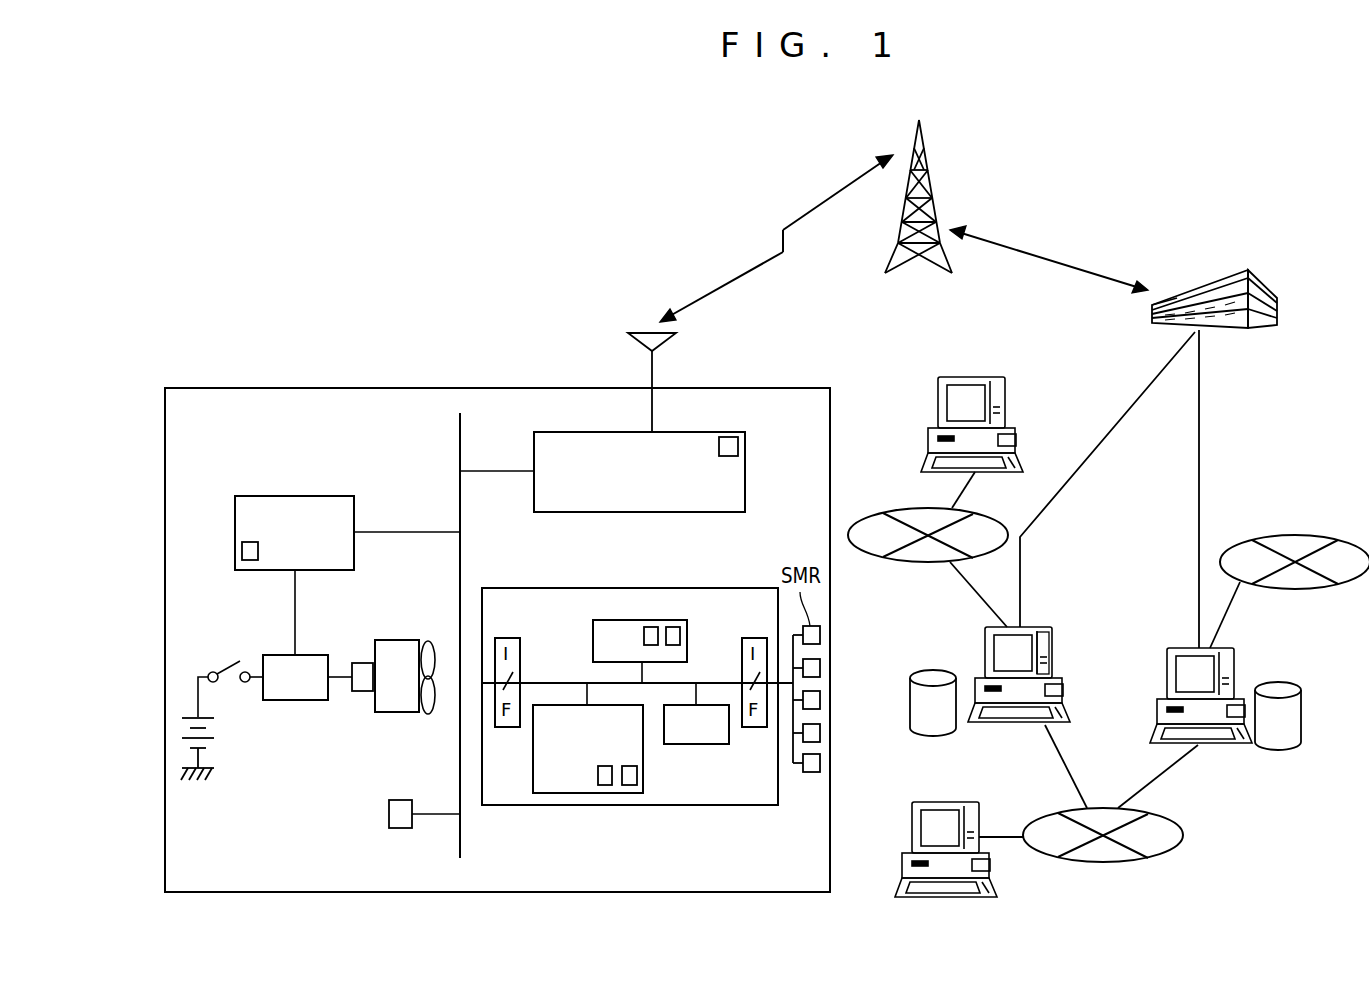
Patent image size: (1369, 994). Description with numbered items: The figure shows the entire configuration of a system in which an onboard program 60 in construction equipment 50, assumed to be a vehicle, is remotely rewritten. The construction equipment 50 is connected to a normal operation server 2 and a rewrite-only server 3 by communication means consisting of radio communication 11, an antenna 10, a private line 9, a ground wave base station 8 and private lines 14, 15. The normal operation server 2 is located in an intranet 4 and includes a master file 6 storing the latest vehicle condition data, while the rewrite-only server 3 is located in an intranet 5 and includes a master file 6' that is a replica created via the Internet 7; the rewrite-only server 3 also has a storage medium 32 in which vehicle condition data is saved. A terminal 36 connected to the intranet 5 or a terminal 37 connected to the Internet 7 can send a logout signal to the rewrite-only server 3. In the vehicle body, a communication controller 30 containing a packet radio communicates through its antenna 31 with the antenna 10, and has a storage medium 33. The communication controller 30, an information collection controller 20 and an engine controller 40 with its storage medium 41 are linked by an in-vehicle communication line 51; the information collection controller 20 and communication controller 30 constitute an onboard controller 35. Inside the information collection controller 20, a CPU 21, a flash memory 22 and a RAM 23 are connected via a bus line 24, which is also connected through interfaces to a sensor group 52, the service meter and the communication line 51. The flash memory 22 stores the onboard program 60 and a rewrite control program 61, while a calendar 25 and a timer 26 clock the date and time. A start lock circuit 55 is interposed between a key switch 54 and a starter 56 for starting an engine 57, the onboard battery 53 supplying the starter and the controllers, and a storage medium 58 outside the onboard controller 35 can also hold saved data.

The normal operation server 2 is at (1233, 675).
The rewrite-only server 3 is at (985, 655).
The intranet 4 is at (1300, 536).
The intranet 5 is at (895, 510).
The master file 6 is at (1263, 743).
The master file 6' is at (906, 723).
The Internet 7 is at (1110, 863).
The ground wave base station 8 is at (1200, 286).
The private line 9 is at (1048, 258).
The antenna 10 is at (930, 162).
The radio communication 11 is at (722, 273).
The private line 14 is at (1200, 412).
The private line 15 is at (1100, 432).
The information collection controller 20 is at (660, 588).
The CPU 21 is at (687, 634).
The flash memory 22 is at (533, 752).
The RAM 23 is at (696, 744).
The bus line 24 is at (565, 683).
The calendar 25 is at (650, 627).
The timer 26 is at (672, 627).
The communication controller 30 is at (745, 478).
The antenna 31 is at (664, 360).
The storage medium 32 is at (1052, 640).
The storage medium 33 is at (738, 440).
The onboard controller 35 is at (710, 527).
The terminal 36 is at (938, 406).
The terminal 37 is at (912, 830).
The engine controller 40 is at (296, 496).
The storage medium 41 is at (243, 551).
The construction equipment 50 is at (518, 388).
The in-vehicle communication line 51 is at (462, 505).
The sensor group 52 is at (811, 772).
The battery 53 is at (215, 730).
The key switch 54 is at (213, 672).
The start lock circuit 55 is at (302, 700).
The starter 56 is at (358, 663).
The engine 57 is at (392, 640).
The storage medium 58 is at (389, 816).
The onboard program 60 is at (605, 785).
The rewrite control program 61 is at (630, 785).